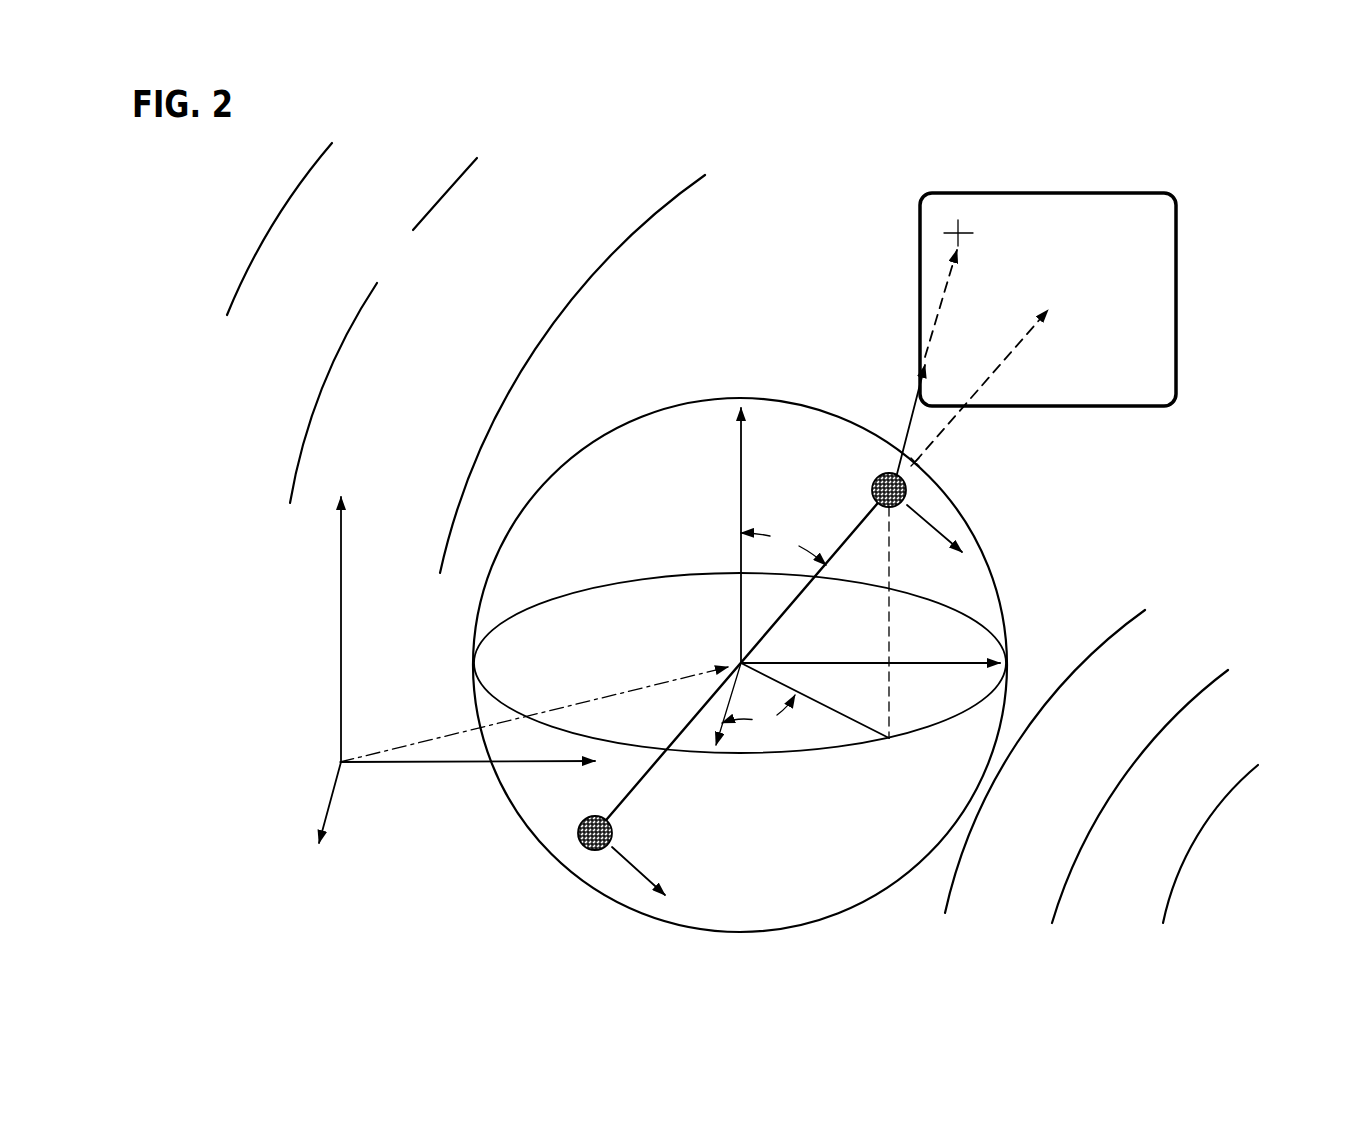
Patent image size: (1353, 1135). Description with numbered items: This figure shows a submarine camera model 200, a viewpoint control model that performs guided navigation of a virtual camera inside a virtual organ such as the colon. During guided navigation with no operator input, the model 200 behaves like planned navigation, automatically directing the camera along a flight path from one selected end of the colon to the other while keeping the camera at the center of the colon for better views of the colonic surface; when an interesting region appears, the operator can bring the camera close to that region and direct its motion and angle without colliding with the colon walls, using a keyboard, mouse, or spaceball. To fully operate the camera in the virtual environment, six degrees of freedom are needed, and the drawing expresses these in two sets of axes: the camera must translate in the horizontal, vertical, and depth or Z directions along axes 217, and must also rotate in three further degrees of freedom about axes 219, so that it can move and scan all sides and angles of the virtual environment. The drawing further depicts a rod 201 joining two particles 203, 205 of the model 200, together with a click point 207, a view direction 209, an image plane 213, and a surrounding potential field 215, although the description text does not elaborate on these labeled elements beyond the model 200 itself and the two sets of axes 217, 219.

The submarine camera model 200 is at (766, 122).
The rod 201 is at (650, 777).
The particle 1 (camera) 203 is at (908, 490).
The particle 2 205 is at (612, 832).
The click point 207 is at (957, 222).
The view direction 209 is at (1025, 333).
The image plane 213 is at (1145, 280).
The potential field V(x) 215 is at (540, 342).
The axes 217 is at (340, 685).
The axes 219 is at (737, 477).